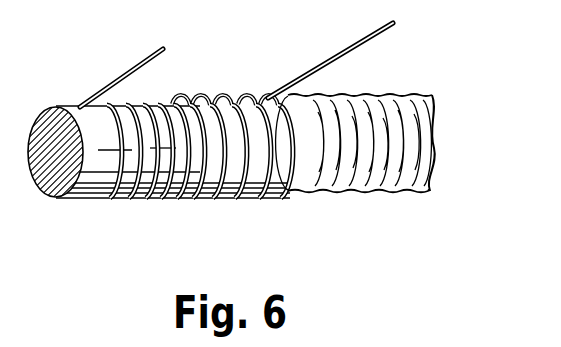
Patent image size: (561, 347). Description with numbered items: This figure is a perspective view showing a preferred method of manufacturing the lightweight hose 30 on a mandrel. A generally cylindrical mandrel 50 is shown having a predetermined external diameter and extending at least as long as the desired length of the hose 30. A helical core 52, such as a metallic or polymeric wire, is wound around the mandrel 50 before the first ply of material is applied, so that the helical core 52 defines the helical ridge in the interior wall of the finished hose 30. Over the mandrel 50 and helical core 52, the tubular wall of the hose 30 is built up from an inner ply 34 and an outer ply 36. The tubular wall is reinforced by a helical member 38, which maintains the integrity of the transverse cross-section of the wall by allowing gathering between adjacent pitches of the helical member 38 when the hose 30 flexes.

The lightweight hose 30 is at (246, 170).
The inner ply 34 is at (180, 188).
The outer ply 36 is at (407, 167).
The helical member 38 is at (358, 47).
The mandrel 50 is at (92, 165).
The helical core 52 is at (128, 75).